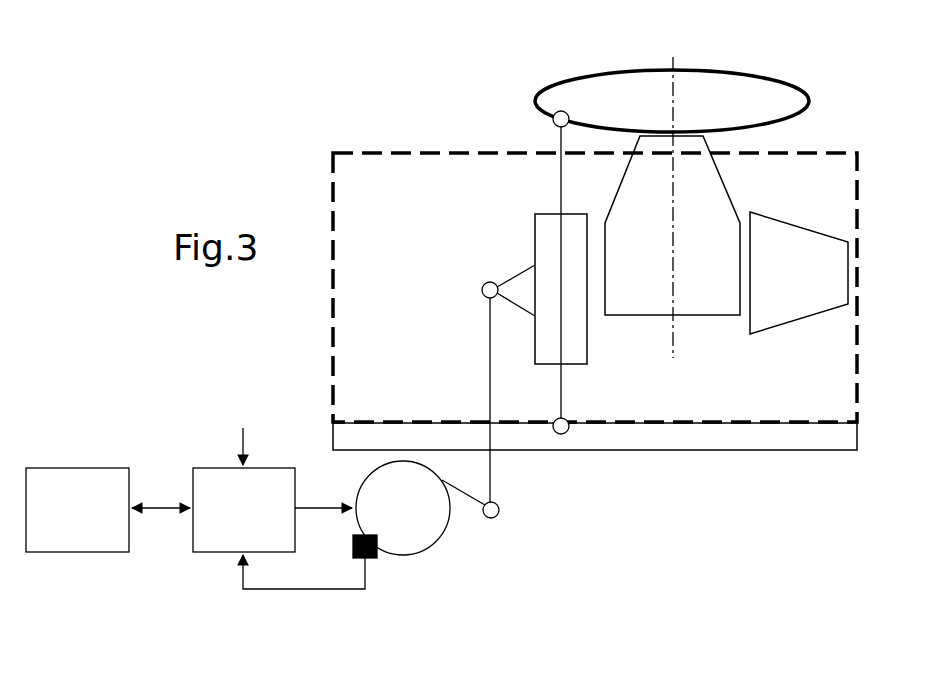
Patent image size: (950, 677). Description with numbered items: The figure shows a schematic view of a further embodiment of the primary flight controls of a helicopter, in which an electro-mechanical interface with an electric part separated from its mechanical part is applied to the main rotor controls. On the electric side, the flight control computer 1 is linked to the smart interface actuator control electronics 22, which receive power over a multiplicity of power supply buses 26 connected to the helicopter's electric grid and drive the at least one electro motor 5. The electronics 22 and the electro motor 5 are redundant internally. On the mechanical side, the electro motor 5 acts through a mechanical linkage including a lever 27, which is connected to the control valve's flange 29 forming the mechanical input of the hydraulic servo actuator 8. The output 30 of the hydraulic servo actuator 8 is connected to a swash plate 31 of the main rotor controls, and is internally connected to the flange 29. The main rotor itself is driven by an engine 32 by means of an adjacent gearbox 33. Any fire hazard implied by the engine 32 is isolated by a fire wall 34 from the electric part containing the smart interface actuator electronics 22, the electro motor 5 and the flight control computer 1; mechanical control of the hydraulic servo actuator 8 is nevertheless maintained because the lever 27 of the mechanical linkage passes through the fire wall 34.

The flight control computer 1 is at (108, 510).
The smart interface actuator control electronics 22 is at (272, 510).
The power supply buses 26 is at (240, 440).
The electro motor 5 is at (346, 525).
The lever 27 is at (488, 378).
The control valve's flange 29 is at (483, 290).
The output 30 is at (557, 140).
The swash plate 31 is at (750, 70).
The engine 32 is at (783, 310).
The gearbox 33 is at (705, 183).
The fire wall 34 is at (742, 440).
The hydraulic servo actuator 8 is at (578, 347).